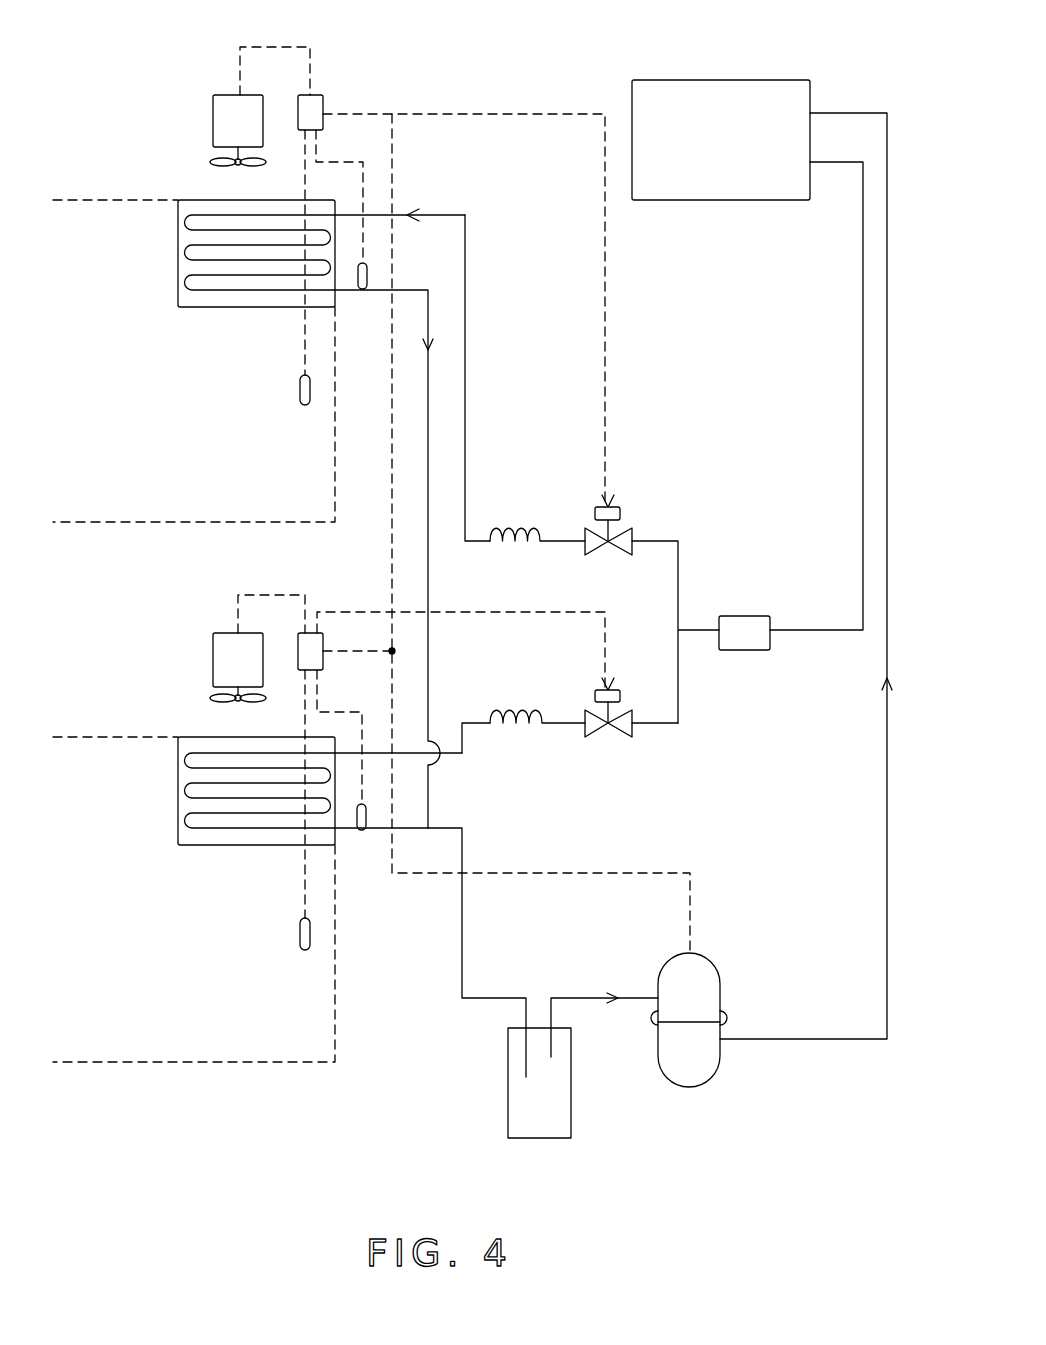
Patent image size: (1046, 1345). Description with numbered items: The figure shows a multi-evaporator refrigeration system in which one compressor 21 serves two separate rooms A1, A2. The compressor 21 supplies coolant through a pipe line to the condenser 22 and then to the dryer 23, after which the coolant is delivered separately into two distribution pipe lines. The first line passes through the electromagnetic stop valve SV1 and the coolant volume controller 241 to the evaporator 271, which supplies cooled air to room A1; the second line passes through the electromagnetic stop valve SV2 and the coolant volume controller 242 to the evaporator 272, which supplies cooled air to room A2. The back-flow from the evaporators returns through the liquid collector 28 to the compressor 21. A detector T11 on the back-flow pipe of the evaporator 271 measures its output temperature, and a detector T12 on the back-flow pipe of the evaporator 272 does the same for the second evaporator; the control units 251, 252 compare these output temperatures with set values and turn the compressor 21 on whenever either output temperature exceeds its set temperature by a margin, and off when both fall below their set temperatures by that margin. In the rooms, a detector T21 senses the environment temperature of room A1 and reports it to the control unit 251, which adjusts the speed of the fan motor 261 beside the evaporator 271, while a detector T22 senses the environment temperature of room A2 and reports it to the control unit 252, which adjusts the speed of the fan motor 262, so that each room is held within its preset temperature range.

The compressor 21 is at (693, 1087).
The condenser 22 is at (698, 90).
The dryer 23 is at (742, 616).
The liquid collector 28 is at (540, 1138).
The coolant volume controller 241 is at (510, 530).
The coolant volume controller 242 is at (511, 713).
The control unit 251 is at (323, 100).
The control unit 252 is at (317, 640).
The fan motor 261 is at (213, 111).
The fan motor 262 is at (213, 656).
The evaporator 271 is at (178, 287).
The evaporator 272 is at (178, 822).
The electromagnetic stop valve SV1 is at (607, 549).
The electromagnetic stop valve SV2 is at (607, 732).
The detector T11 is at (367, 286).
The detector T12 is at (366, 830).
The detector T21 is at (300, 393).
The detector T22 is at (300, 935).
The room A1 is at (110, 455).
The room A2 is at (105, 1015).